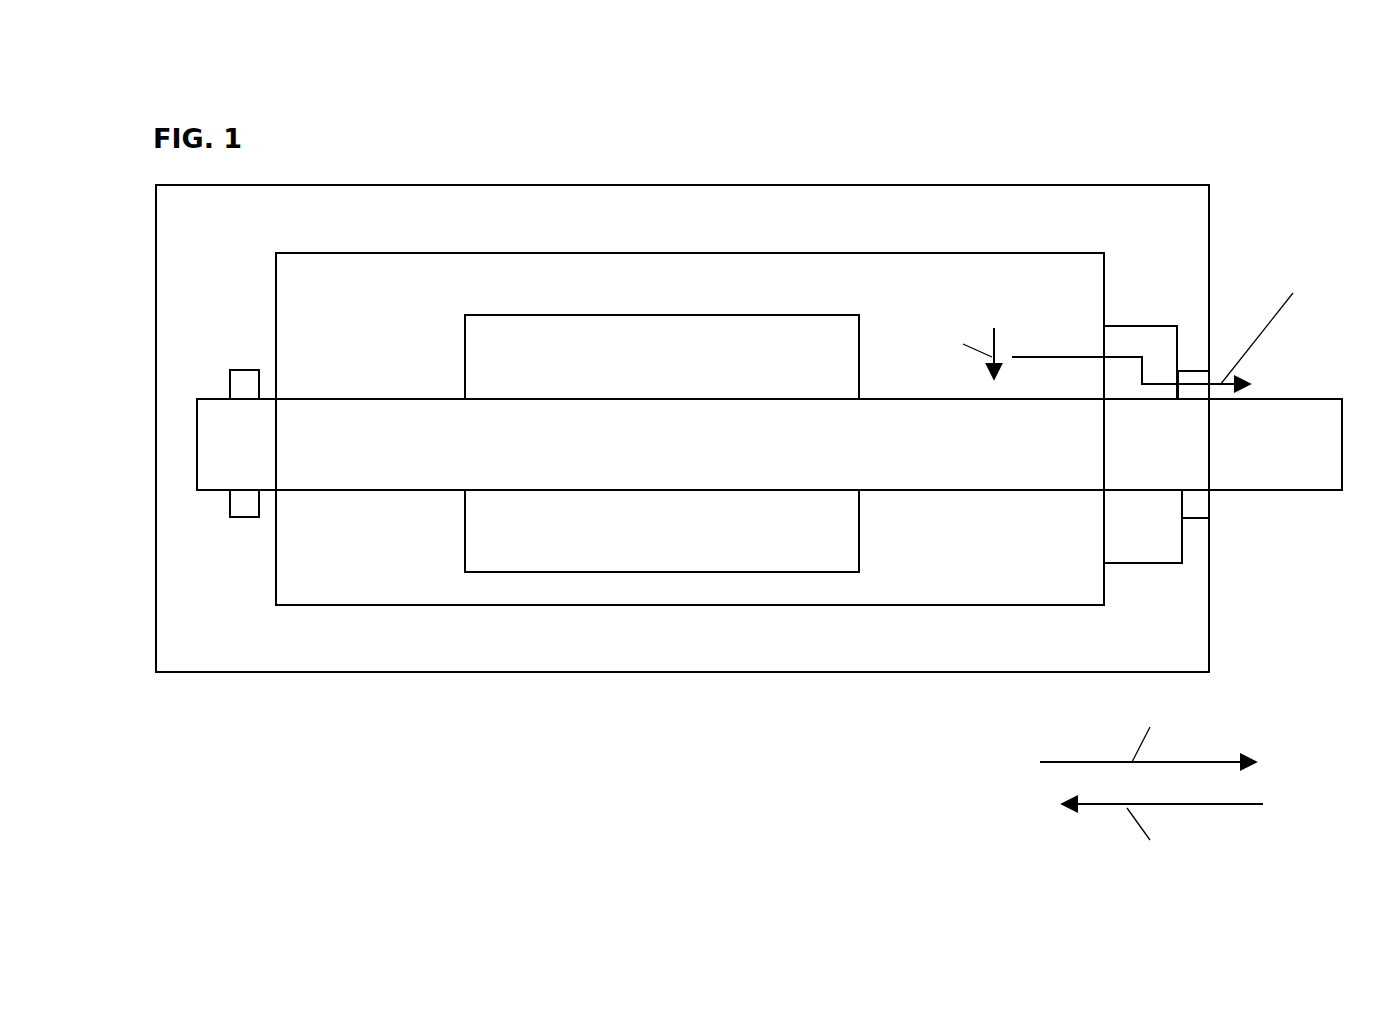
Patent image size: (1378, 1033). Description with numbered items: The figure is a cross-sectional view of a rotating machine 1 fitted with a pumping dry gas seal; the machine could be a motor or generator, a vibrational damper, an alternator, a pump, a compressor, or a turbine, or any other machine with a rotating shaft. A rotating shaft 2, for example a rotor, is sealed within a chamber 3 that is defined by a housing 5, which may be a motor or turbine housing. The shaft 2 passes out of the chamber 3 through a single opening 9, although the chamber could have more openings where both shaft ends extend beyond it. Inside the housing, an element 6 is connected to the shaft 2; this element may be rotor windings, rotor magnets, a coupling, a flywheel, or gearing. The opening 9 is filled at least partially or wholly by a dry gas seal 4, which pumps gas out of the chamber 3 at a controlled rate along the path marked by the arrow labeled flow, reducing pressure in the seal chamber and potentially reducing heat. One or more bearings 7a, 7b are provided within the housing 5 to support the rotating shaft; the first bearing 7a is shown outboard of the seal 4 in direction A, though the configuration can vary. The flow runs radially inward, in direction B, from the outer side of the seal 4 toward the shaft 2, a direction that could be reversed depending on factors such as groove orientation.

The rotating machine 1 is at (432, 139).
The rotating shaft 2 is at (395, 465).
The chamber 3 is at (917, 293).
The dry gas seal 4 is at (1104, 493).
The housing 5 is at (1031, 218).
The element 6 is at (725, 337).
The first bearing 7a is at (1148, 520).
The second bearing 7b is at (250, 517).
The opening 9 is at (1137, 563).